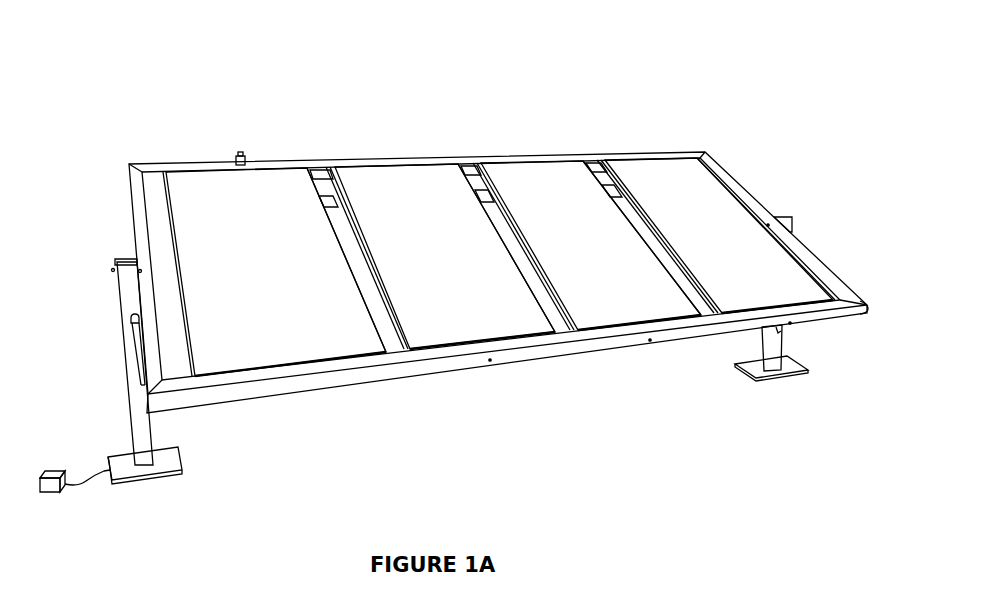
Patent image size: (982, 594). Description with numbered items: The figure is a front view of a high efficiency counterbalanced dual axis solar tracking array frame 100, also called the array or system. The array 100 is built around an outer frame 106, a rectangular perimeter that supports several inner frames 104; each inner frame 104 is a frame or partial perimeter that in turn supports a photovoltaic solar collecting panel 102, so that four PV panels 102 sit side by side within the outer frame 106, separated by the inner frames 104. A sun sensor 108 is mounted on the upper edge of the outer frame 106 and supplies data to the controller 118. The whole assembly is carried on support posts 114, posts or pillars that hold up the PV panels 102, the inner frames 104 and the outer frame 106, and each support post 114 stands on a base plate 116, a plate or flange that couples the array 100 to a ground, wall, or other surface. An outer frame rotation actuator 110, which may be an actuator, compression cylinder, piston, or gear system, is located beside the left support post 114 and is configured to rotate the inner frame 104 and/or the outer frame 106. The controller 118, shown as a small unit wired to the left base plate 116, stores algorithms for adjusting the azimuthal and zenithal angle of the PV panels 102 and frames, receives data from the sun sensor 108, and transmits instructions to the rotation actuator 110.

The high efficiency counterbalanced dual axis solar tracking array frame 100 is at (539, 101).
The photovoltaic solar collecting panel 102 is at (299, 335).
The inner frame 104 is at (392, 342).
The outer frame 106 is at (723, 152).
The sun sensor 108 is at (223, 138).
The outer frame rotation actuator 110 is at (123, 348).
The support post 114 is at (113, 362).
The base plate 116 is at (155, 487).
The controller 118 is at (59, 505).